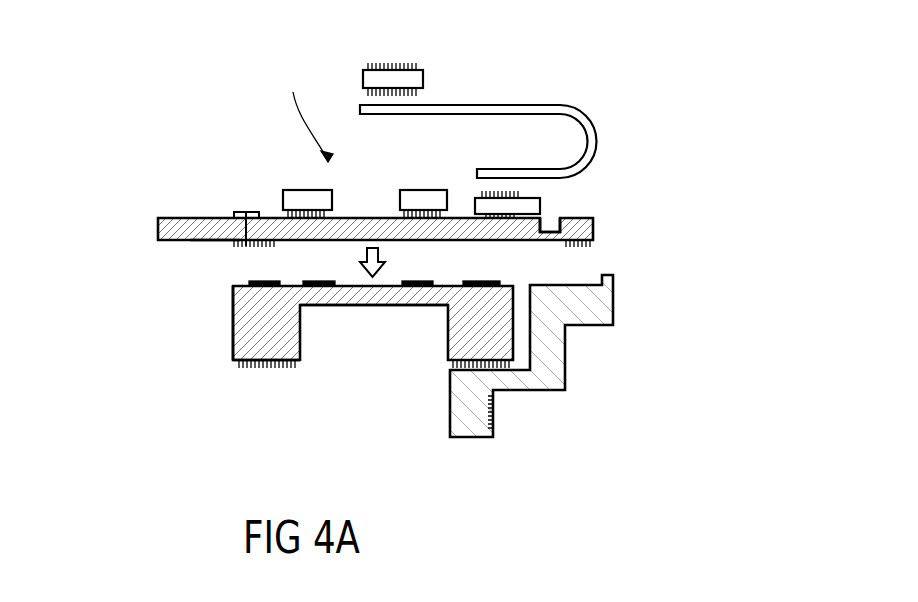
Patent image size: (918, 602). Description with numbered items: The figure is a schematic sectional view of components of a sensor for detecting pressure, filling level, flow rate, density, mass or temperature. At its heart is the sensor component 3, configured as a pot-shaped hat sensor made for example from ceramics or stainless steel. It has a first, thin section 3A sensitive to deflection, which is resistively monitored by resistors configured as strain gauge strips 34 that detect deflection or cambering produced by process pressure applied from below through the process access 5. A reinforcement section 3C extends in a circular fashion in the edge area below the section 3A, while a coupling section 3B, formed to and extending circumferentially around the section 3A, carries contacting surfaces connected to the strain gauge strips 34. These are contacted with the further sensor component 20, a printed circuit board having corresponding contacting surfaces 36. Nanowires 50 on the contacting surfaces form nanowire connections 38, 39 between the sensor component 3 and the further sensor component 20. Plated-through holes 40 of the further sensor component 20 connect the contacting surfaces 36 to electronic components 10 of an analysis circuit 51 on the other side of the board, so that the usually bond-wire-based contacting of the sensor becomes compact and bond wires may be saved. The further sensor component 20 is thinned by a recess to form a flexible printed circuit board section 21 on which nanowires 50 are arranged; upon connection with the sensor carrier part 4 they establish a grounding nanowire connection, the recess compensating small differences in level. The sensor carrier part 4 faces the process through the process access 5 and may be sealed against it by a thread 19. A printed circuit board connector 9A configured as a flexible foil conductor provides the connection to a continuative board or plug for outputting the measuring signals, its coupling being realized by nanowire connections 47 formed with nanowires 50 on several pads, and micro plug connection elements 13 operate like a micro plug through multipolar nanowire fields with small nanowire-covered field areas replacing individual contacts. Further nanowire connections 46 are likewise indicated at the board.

The sensor component 3 is at (327, 348).
The section sensitive to deflection 3A is at (374, 302).
The coupling section 3B is at (233, 300).
The reinforcement section 3C is at (233, 350).
The sensor carrier part 4 is at (546, 396).
The process access 5 is at (368, 392).
The printed circuit board connector 9A is at (596, 139).
The electronic components 10 is at (301, 197).
The micro plug connection elements 13 is at (423, 77).
The thread 19 is at (495, 430).
The further sensor component 20 is at (178, 225).
The flexible printed circuit board section 21 is at (557, 224).
The strain gauge strips 34 is at (318, 288).
The contacting surfaces 36 is at (222, 241).
The nanowire connections 38 is at (272, 288).
The nanowire connections 39 is at (243, 247).
The plated-through holes 40 is at (246, 222).
The solder contacts 46 is at (597, 245).
The nanowire connections 47 is at (498, 197).
The nanowires 50 is at (424, 254).
The analysis circuit 51 is at (304, 110).